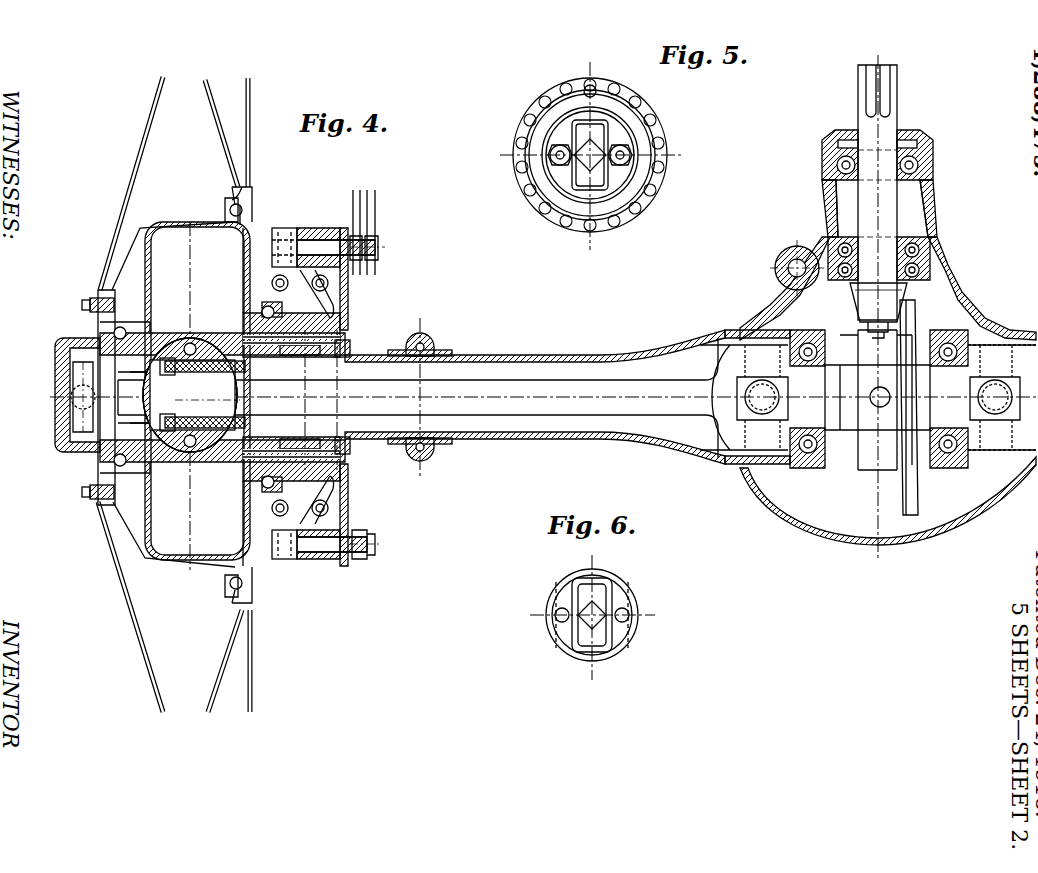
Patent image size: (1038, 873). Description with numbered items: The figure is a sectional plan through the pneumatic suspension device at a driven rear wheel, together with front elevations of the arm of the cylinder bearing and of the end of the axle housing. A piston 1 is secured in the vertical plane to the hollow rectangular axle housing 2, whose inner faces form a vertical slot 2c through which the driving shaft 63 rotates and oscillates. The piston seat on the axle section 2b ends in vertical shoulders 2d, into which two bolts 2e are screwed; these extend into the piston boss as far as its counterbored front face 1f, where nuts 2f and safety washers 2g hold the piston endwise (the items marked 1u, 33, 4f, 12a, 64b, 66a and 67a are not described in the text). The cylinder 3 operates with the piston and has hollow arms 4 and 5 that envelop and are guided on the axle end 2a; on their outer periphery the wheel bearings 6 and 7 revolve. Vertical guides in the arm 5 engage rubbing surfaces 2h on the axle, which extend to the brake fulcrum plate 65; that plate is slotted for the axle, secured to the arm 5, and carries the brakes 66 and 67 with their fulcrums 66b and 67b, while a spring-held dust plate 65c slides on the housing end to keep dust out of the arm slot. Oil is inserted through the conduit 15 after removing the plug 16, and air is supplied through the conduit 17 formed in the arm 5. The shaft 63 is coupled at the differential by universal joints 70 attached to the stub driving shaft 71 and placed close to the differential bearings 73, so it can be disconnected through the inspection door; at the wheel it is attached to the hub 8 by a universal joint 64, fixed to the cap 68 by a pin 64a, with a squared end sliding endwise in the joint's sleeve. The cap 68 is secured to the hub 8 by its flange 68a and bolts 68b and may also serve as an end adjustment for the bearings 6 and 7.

In FIG. 5, the piston 1 is at (625, 178).
In FIG. 4, the front face of the boss 1f is at (162, 470).
In FIG. 4, the housing bearing seat 1u is at (218, 345).
In FIG. 4, the axle housing 2 is at (385, 336).
In FIG. 6, the axle housing 2 is at (632, 660).
In FIG. 4, the axle end 2a is at (202, 415).
In FIG. 5, the axle section forming the seat for the piston 2b is at (567, 185).
In FIG. 6, the axle section forming the seat for the piston 2b is at (612, 590).
In FIG. 4, the vertical slot 2c is at (202, 366).
In FIG. 6, the vertical slot 2c is at (590, 594).
In FIG. 4, the vertical shoulders 2d is at (240, 440).
In FIG. 5, the bolts 2e is at (630, 153).
In FIG. 6, the bolts 2e is at (655, 632).
In FIG. 4, the nuts 2f is at (168, 348).
In FIG. 5, the nuts 2f is at (548, 152).
In FIG. 4, the safety washers 2g is at (160, 437).
In FIG. 4, the vertical rubbing surfaces 2h is at (300, 365).
In FIG. 6, the vertical rubbing surfaces 2h is at (655, 605).
In FIG. 4, the cylinder 3 is at (190, 396).
In FIG. 4, the brake drum chamber 33 is at (194, 388).
In FIG. 4, the hollow arm 4 is at (222, 397).
In FIG. 5, the hollow arm 4 is at (578, 190).
In FIG. 5, the hub flange 4f is at (625, 128).
In FIG. 4, the hollow arm 5 is at (285, 308).
In FIG. 4, the bearing 6 is at (126, 330).
In FIG. 5, the bearing 6 is at (594, 86).
In FIG. 4, the bearing 7 is at (285, 486).
In FIG. 4, the hub 8 is at (183, 213).
In FIG. 4, the bearing retainer 12a is at (205, 450).
In FIG. 4, the conduit 15 is at (298, 340).
In FIG. 4, the plug 16 is at (352, 345).
In FIG. 4, the conduit 17 is at (352, 449).
In FIG. 4, the driving shaft 63 is at (418, 398).
In FIG. 5, the driving shaft 63 is at (590, 155).
In FIG. 6, the driving shaft 63 is at (590, 630).
In FIG. 4, the universal joint 64 is at (72, 432).
In FIG. 4, the pin 64a is at (150, 400).
In FIG. 4, the nut washer 64b is at (92, 336).
In FIG. 4, the brake fulcrum plate 65 is at (352, 292).
In FIG. 4, the dust plate 65c is at (352, 437).
In FIG. 4, the brake 66 is at (278, 289).
In FIG. 4, the lower bolt block 66a is at (284, 560).
In FIG. 4, the fulcrum 66b is at (284, 232).
In FIG. 4, the brake 67 is at (320, 289).
In FIG. 4, the lower bolt 67a is at (318, 560).
In FIG. 4, the fulcrum 67b is at (312, 232).
In FIG. 4, the cap 68 is at (62, 346).
In FIG. 4, the flange 68a is at (88, 497).
In FIG. 4, the bolts 68b is at (88, 300).
In FIG. 4, the universal joints 70 is at (750, 372).
In FIG. 4, the stub driving shaft 71 is at (892, 407).
In FIG. 4, the bearings 73 is at (858, 335).